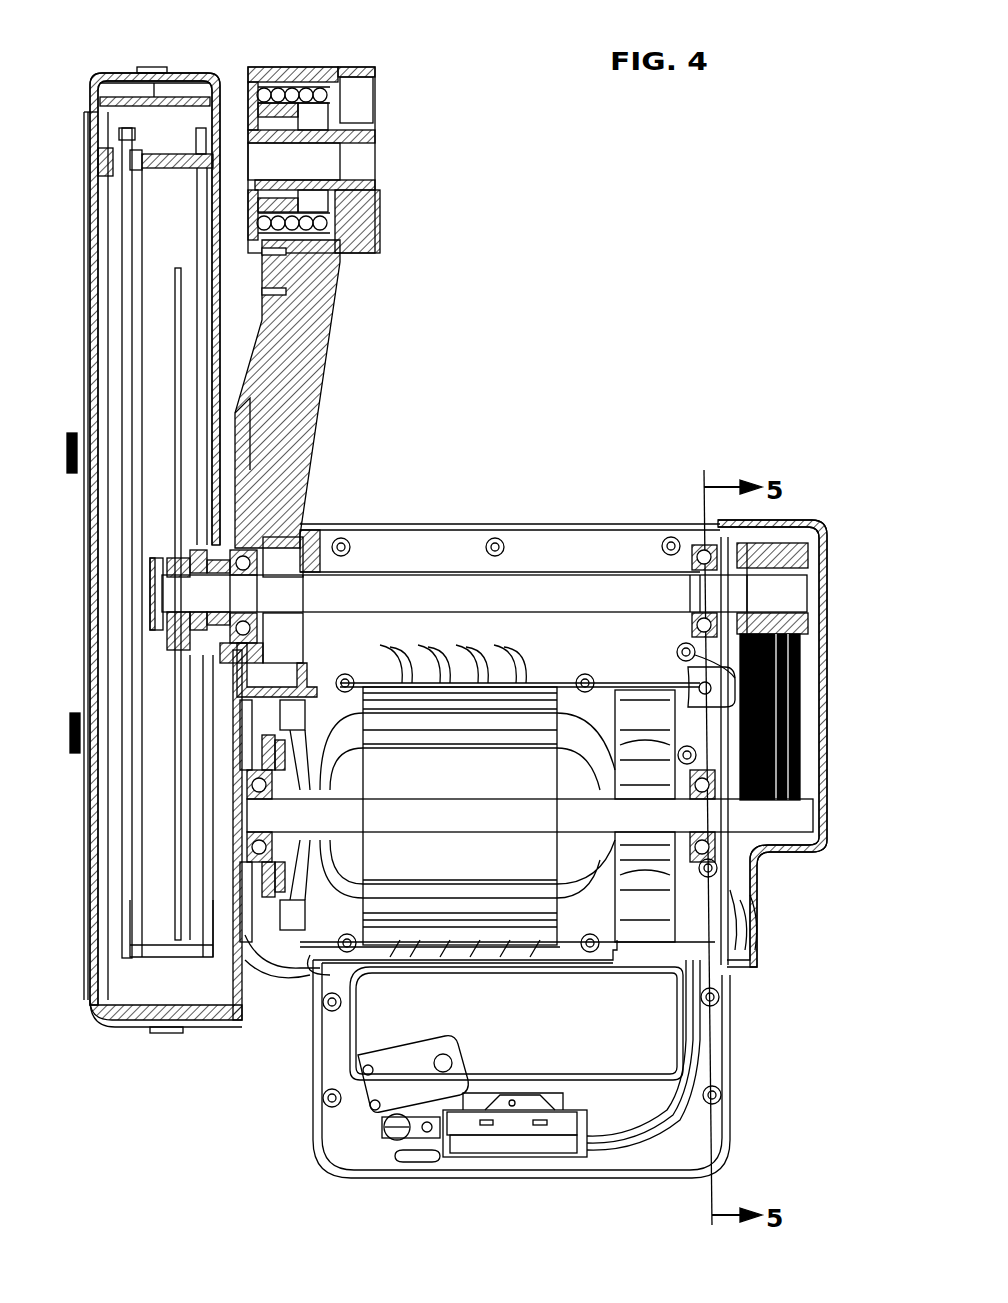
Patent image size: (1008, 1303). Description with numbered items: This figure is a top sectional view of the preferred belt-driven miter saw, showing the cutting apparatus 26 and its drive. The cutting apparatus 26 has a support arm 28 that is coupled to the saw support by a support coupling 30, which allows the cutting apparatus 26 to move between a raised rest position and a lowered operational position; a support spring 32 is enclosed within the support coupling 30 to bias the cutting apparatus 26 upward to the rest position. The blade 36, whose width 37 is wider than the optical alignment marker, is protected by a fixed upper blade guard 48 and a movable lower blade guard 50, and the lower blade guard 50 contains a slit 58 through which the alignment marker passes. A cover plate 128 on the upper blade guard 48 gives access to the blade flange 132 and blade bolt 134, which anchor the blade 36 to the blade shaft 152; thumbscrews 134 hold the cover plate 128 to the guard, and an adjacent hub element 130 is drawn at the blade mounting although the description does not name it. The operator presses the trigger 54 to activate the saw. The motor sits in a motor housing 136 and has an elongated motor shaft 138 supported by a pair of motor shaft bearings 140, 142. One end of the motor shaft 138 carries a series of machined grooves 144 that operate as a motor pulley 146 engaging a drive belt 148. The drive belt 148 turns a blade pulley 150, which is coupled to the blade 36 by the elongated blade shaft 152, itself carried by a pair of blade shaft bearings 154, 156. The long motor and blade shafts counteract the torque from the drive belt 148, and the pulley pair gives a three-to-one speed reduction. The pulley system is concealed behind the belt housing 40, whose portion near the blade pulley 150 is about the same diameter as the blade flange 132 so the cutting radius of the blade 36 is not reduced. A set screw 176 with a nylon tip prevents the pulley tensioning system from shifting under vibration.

The cutting apparatus 26 is at (612, 492).
The support arm 28 is at (330, 394).
The support coupling 30 is at (350, 67).
The support spring 32 is at (248, 95).
The blade 36 is at (160, 800).
The width 37 is at (176, 268).
The belt housing 40 is at (828, 700).
The upper blade guard 48 is at (177, 1033).
The lower blade guard 50 is at (118, 232).
The trigger 54 is at (440, 1037).
The slit 58 is at (175, 952).
The cover plate 128 is at (85, 580).
The hub 130 is at (165, 556).
The blade flange 132 is at (150, 605).
The blade bolt 134 is at (66, 438).
The motor housing 136 is at (420, 523).
The motor shaft 138 is at (392, 820).
The motor shaft bearing 140 is at (698, 834).
The motor shaft bearing 142 is at (248, 847).
The machined grooves 144 is at (778, 857).
The motor pulley 146 is at (733, 920).
The drive belt 148 is at (802, 745).
The blade pulley 150 is at (788, 560).
The blade shaft 152 is at (528, 592).
The blade shaft bearing 154 is at (700, 548).
The blade shaft bearing 156 is at (265, 548).
The set screw 176 is at (680, 652).